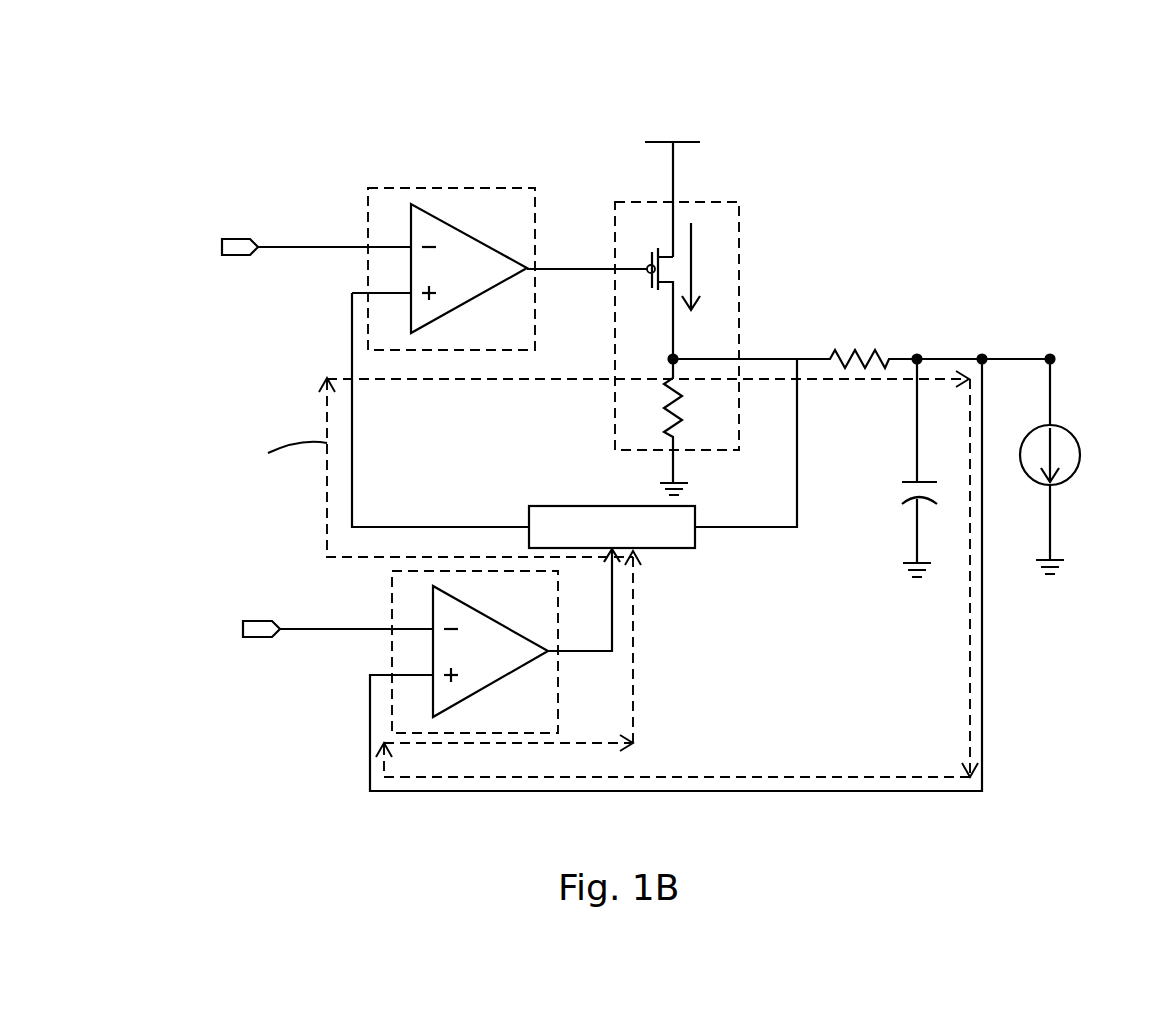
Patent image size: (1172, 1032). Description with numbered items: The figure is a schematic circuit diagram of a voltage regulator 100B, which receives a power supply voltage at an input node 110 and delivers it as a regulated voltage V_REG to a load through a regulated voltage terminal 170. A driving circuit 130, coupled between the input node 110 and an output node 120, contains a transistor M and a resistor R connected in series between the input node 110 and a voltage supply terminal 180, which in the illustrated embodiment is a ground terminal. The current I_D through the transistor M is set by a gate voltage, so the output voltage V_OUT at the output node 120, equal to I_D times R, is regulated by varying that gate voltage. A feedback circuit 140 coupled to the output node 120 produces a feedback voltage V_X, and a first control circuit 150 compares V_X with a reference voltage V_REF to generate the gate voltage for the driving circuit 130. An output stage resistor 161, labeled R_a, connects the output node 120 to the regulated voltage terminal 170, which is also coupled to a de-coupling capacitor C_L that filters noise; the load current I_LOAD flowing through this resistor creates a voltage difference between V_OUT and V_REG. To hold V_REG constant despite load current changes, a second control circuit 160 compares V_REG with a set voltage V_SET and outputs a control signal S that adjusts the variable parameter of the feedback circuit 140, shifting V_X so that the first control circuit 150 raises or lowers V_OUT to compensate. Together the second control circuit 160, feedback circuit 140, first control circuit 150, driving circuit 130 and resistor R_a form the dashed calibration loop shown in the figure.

The voltage regulator 100B is at (1095, 116).
The input node 110 is at (695, 142).
The output node 120 is at (801, 363).
The driving circuit 130 is at (739, 243).
The feedback circuit 140 is at (674, 548).
The first control circuit 150 is at (373, 188).
The second control circuit 160 is at (392, 587).
The output stage resistor 161 is at (878, 355).
The regulated voltage terminal 170 is at (1053, 356).
The voltage supply terminal 180 is at (669, 482).